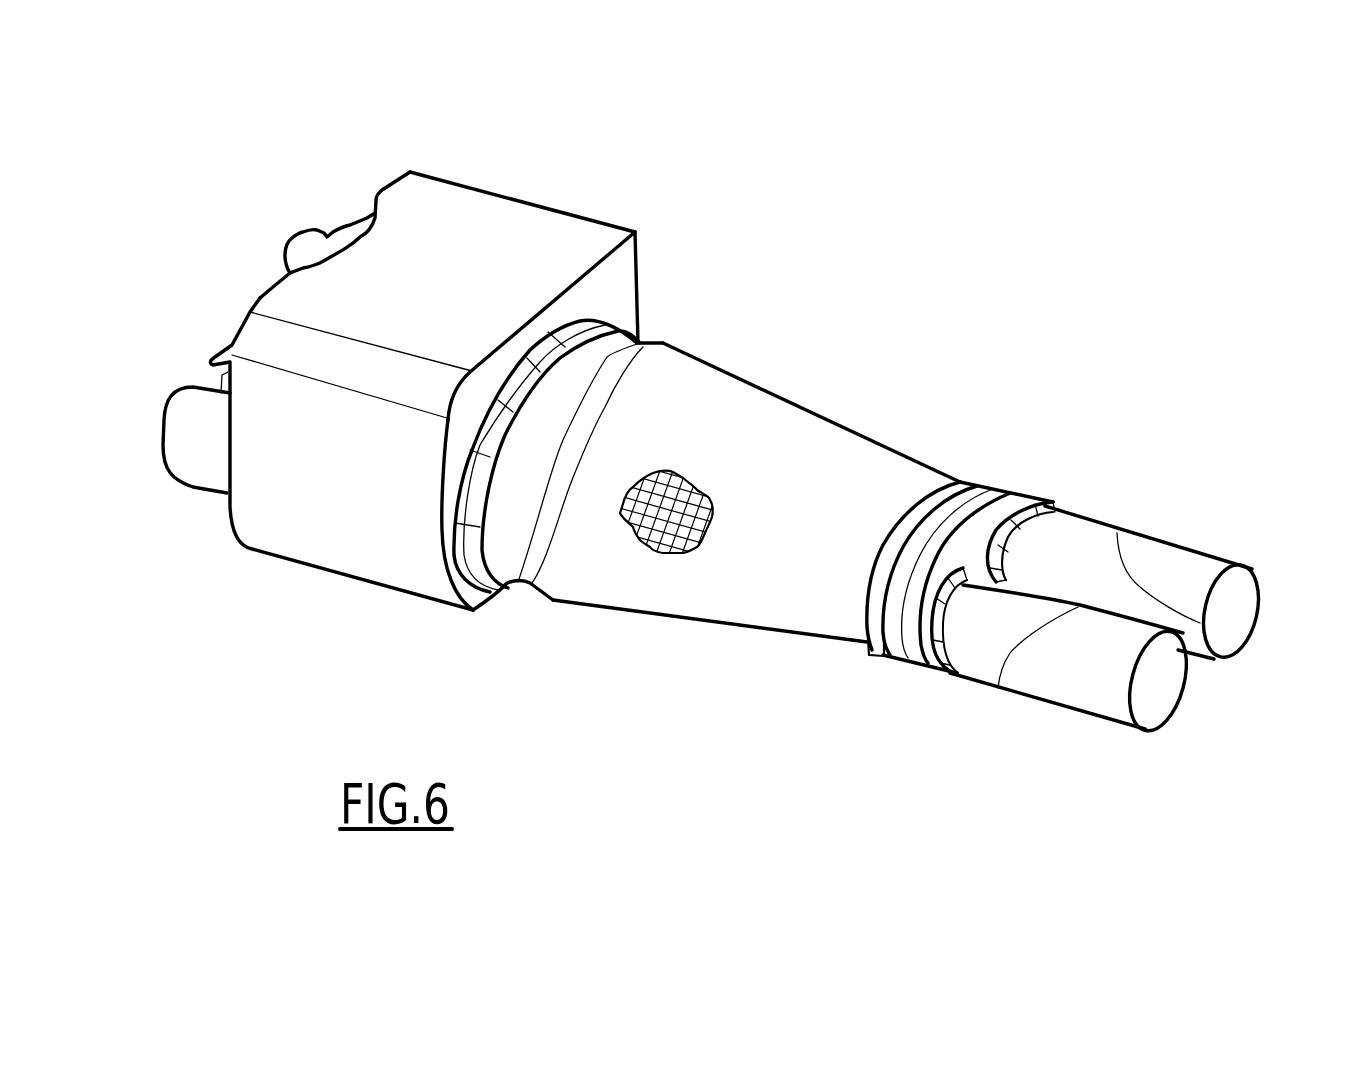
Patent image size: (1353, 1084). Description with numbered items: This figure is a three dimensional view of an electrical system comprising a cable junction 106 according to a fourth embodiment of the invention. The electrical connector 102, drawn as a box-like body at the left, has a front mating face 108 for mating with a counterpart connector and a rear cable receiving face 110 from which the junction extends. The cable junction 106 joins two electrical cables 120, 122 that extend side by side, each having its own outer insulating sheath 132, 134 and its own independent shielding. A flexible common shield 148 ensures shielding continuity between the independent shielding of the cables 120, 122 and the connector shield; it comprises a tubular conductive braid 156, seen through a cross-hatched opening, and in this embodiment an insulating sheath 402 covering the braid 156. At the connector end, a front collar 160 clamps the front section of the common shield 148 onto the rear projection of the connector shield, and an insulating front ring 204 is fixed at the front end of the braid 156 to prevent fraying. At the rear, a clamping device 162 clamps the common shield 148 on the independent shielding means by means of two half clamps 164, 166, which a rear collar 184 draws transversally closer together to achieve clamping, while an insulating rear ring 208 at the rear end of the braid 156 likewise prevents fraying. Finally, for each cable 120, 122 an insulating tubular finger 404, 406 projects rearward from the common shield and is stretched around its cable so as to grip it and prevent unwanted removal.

The electrical connector 102 is at (457, 398).
The insulating front ring 204 is at (557, 340).
The front mating face 108 is at (224, 282).
The rear cable receiving face 110 is at (648, 292).
The cable junction 106 is at (935, 524).
The tubular conductive braid 156 is at (673, 478).
The insulating sheath 402 is at (783, 412).
The common shield 148 is at (761, 492).
The rear collar 184 is at (955, 503).
The clamping device 162 is at (1005, 480).
The insulating rear ring 208 is at (1052, 508).
The insulating tubular finger 404 is at (1097, 533).
The electrical cable 120 is at (1181, 547).
The outer insulating sheath 132 is at (1212, 565).
The outer insulating sheath 134 is at (1107, 693).
The electrical cable 122 is at (1051, 720).
The insulating tubular finger 406 is at (977, 658).
The half clamp 166 is at (873, 656).
The half clamp 164 is at (857, 610).
The front collar 160 is at (493, 580).